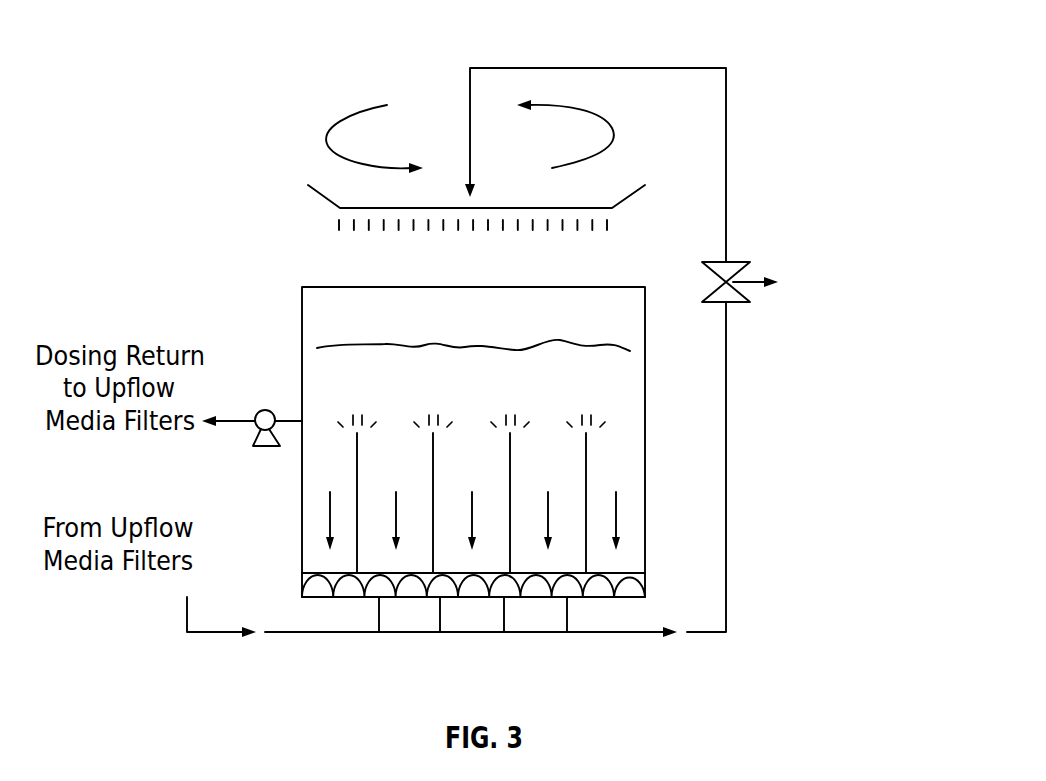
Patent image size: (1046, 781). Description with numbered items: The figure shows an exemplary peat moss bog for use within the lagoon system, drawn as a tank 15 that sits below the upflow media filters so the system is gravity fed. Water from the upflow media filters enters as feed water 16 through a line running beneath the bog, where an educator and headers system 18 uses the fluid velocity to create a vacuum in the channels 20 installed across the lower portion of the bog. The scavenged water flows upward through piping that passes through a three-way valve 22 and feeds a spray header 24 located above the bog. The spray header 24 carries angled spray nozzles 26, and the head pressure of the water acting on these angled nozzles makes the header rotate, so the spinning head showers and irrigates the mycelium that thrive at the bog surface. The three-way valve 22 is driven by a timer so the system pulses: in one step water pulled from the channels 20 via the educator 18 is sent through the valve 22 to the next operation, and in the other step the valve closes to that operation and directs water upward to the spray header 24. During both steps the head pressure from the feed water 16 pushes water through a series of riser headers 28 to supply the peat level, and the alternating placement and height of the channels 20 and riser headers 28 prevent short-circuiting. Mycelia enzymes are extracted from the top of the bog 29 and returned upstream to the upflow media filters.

The dosing tank 15 is at (302, 312).
The Bog system feed water 16 is at (187, 614).
The Educator and headers system 18 is at (408, 617).
The Channels 20 is at (353, 588).
The 3-way valve 22 is at (716, 288).
The Spray Header 24 is at (504, 68).
The Angled Spray Nozzles 26 is at (325, 197).
The Riser Headers 28 is at (357, 470).
The top of the Bog 29 is at (265, 411).